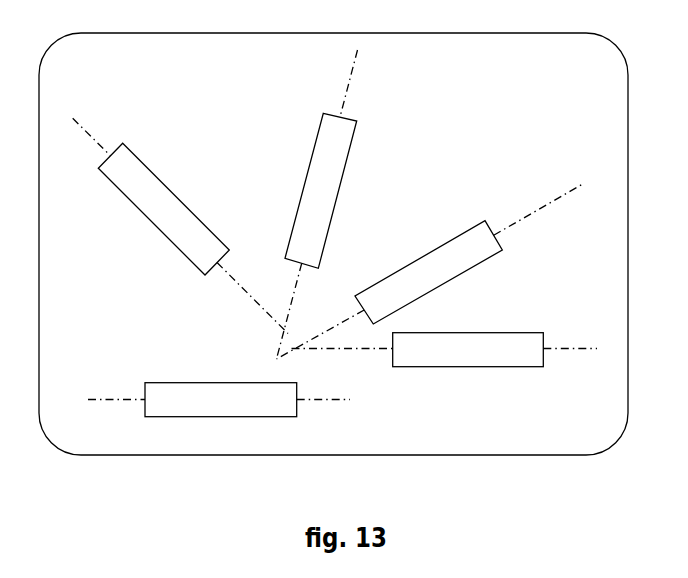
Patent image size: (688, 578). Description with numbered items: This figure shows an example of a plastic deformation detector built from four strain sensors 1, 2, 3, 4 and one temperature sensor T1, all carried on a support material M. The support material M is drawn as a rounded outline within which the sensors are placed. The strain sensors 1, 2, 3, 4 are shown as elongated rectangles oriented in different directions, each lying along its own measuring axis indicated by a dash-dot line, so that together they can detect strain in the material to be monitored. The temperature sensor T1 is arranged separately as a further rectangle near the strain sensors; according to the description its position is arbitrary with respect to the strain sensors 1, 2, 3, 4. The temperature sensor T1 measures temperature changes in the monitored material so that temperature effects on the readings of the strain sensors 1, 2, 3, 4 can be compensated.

The support material M is at (333, 244).
The strain sensor 1 is at (445, 334).
The strain sensor 2 is at (430, 271).
The strain sensor 3 is at (317, 204).
The strain sensor 4 is at (180, 225).
The temperature sensor T1 is at (219, 384).